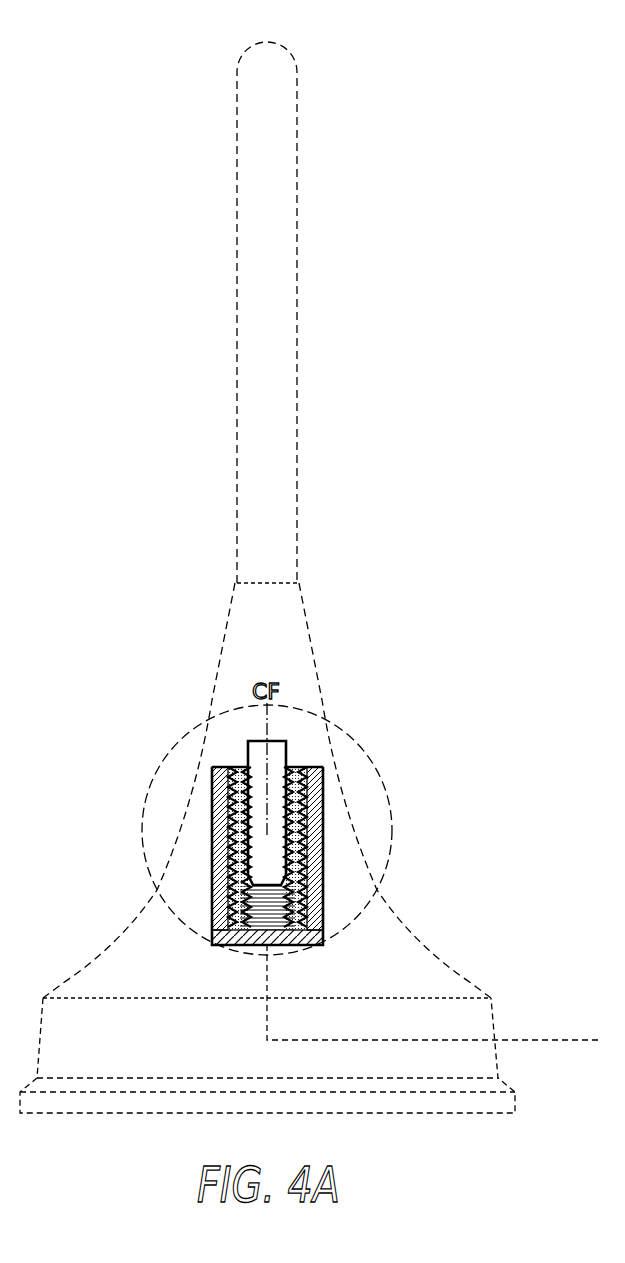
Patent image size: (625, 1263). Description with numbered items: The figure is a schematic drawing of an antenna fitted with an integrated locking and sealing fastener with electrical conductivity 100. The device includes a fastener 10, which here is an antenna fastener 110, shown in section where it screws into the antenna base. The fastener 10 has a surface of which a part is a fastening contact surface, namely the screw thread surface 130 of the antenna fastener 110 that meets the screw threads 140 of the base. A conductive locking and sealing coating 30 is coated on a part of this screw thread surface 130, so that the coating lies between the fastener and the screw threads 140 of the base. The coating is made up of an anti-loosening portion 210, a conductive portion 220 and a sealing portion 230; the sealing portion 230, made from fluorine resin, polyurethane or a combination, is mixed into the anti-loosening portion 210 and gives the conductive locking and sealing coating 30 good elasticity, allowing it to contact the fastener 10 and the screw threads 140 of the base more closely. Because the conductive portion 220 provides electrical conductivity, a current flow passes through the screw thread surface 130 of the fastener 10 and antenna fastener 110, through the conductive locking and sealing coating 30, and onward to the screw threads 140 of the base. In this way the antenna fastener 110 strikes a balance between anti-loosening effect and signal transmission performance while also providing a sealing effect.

The integrated locking and sealing fastener with electrical conductivity 100 is at (542, 47).
The fastener 10 is at (209, 775).
The antenna fastener 110 is at (240, 759).
The conductive locking and sealing coating 30 is at (351, 814).
The anti-loosening portion 210 is at (359, 809).
The conductive portion 220 is at (359, 825).
The sealing portion 230 is at (366, 842).
The screw thread surface 130 is at (323, 806).
The screw threads of a base 140 is at (359, 809).